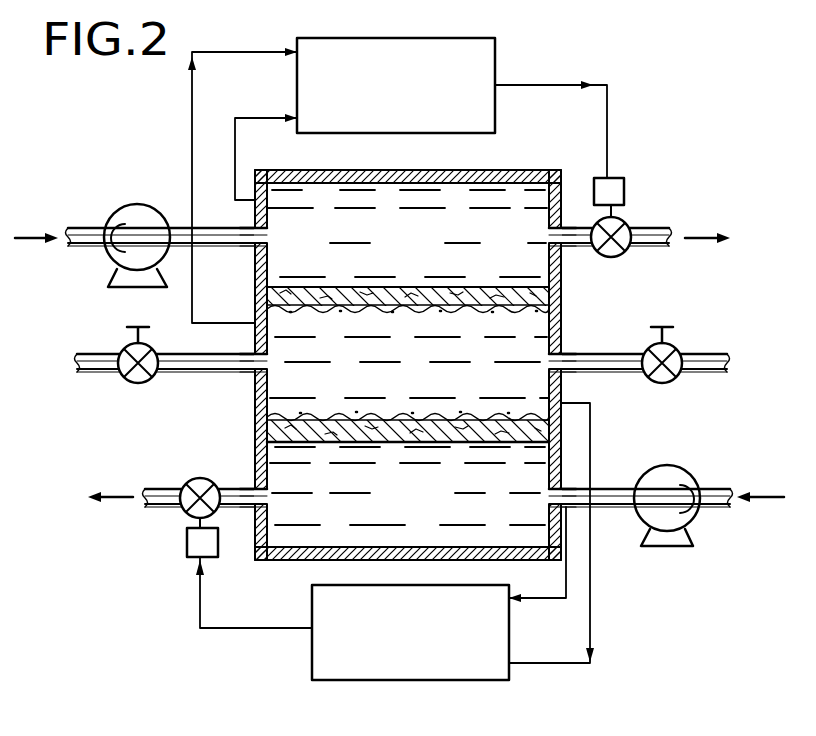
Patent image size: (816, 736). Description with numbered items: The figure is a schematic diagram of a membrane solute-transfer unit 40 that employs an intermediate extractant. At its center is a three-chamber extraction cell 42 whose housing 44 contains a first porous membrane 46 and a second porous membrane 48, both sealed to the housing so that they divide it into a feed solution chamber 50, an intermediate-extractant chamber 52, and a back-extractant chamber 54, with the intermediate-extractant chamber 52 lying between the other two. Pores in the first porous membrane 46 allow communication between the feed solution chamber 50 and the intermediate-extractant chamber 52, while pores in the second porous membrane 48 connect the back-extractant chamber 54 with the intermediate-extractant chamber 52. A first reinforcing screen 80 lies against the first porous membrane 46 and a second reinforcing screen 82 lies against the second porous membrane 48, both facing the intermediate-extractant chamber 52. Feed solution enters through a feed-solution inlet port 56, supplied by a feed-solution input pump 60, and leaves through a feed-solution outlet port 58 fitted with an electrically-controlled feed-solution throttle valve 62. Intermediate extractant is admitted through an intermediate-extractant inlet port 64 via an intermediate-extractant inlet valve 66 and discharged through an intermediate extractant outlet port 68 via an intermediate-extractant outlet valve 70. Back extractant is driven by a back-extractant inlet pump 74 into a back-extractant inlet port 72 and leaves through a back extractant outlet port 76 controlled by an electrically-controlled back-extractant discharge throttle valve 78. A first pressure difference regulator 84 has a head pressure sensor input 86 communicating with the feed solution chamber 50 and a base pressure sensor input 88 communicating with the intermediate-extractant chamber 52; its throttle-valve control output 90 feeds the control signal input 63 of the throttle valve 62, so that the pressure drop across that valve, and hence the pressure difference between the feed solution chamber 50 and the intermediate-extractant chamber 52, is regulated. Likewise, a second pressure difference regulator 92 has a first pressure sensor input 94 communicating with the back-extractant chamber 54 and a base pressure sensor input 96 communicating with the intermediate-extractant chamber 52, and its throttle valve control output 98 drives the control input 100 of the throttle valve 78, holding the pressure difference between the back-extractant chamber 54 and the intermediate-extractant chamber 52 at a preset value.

The membrane solute-transfer unit 40 is at (455, 340).
The three-chamber extraction cell 42 is at (540, 170).
The housing 44 is at (255, 545).
The first porous membrane 46 is at (383, 288).
The second porous membrane 48 is at (408, 438).
The feed solution chamber 50 is at (403, 243).
The intermediate-extractant chamber 52 is at (416, 395).
The back-extractant chamber 54 is at (411, 521).
The feed-solution inlet port 56 is at (272, 242).
The feed-solution outlet port 58 is at (546, 246).
The feed-solution input pump 60 is at (140, 203).
The feed-solution throttle valve 62 is at (630, 222).
The control signal input 63 is at (598, 178).
The intermediate-extractant inlet port 64 is at (270, 373).
The intermediate-extractant inlet valve 66 is at (140, 384).
The intermediate extractant outlet port 68 is at (548, 372).
The intermediate-extractant outlet valve 70 is at (680, 346).
The back-extractant inlet port 72 is at (548, 493).
The back-extractant inlet pump 74 is at (684, 471).
The back extractant outlet port 76 is at (273, 497).
The back-extractant discharge throttle valve 78 is at (198, 478).
The first reinforcing screen 80 is at (440, 312).
The second reinforcing screen 82 is at (372, 414).
The first pressure difference regulator 84 is at (496, 40).
The head pressure sensor input 86 is at (296, 116).
The base pressure sensor input 88 is at (296, 48).
The throttle-valve control output 90 is at (497, 82).
The second pressure difference regulator 92 is at (312, 598).
The first pressure sensor input 94 is at (511, 600).
The base pressure sensor input 96 is at (511, 663).
The throttle valve control output 98 is at (311, 630).
The control input 100 is at (196, 570).